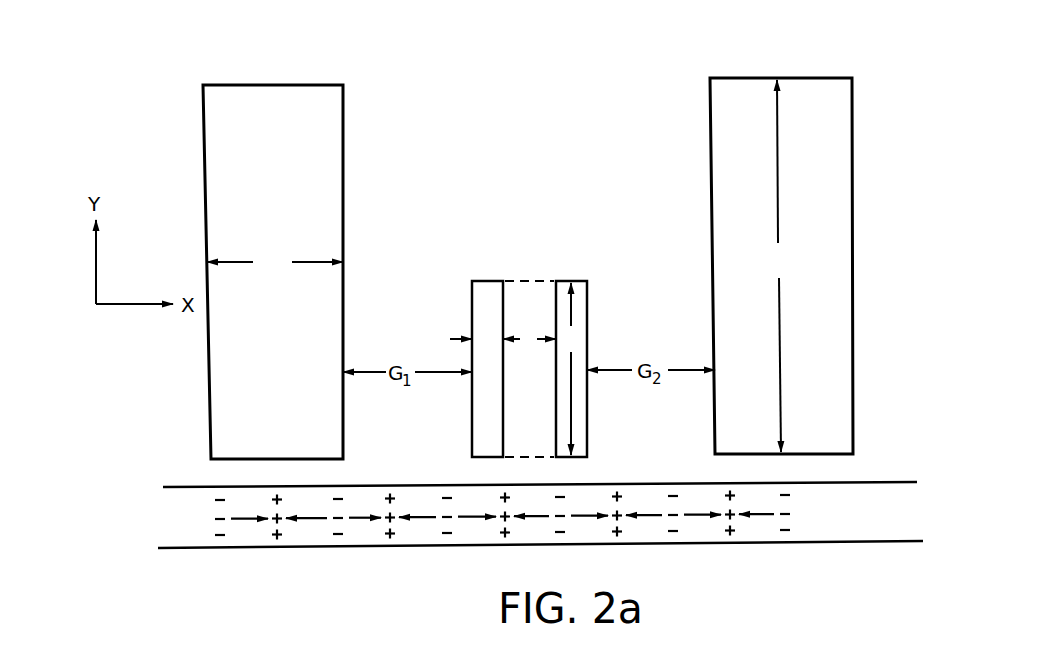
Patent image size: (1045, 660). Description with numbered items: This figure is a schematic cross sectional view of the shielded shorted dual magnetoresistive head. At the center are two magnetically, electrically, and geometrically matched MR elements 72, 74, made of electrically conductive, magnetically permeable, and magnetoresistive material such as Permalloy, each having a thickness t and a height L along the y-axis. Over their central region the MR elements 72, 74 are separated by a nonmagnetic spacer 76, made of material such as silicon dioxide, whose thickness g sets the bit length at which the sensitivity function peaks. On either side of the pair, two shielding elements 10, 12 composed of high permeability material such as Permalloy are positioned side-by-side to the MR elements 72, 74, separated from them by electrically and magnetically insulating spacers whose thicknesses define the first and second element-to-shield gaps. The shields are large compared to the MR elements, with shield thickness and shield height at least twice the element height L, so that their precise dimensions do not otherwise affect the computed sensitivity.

The shielding element 10 is at (361, 96).
The shielding element 12 is at (859, 101).
The MR element 72 is at (488, 278).
The MR element 74 is at (571, 278).
The nonmagnetic spacer 76 is at (527, 300).